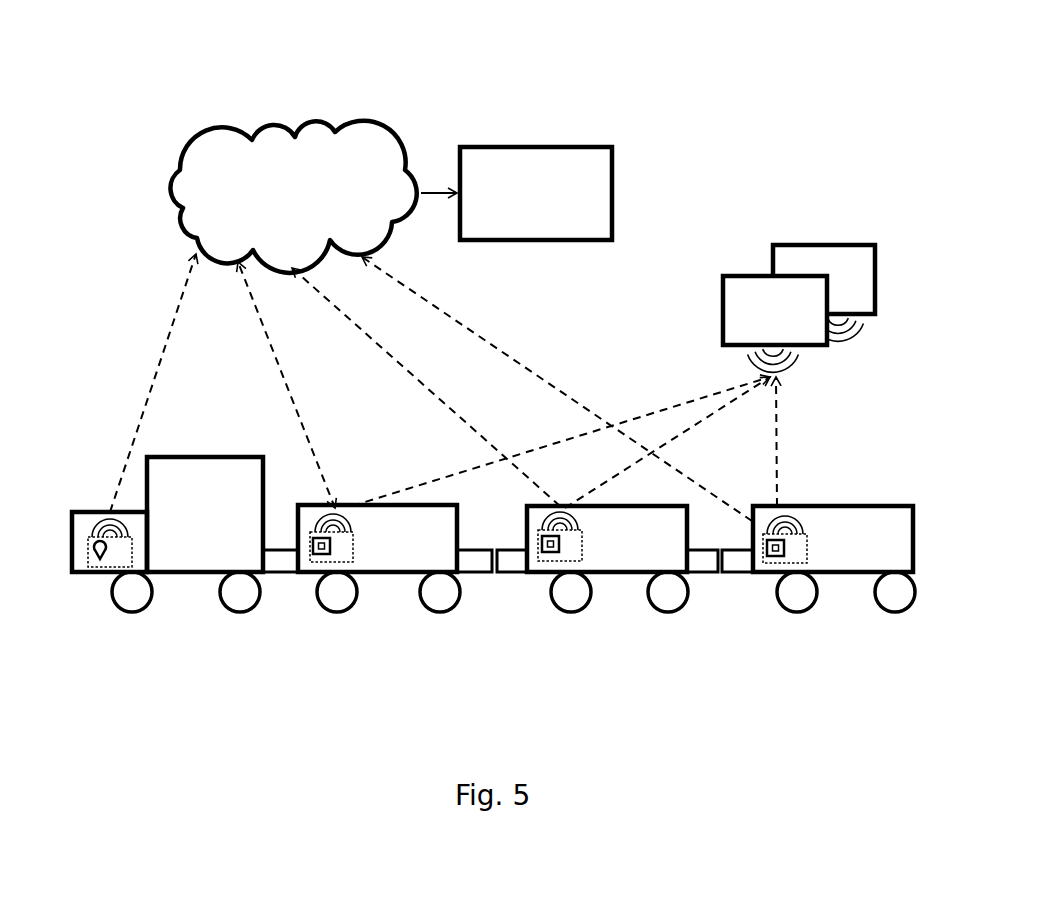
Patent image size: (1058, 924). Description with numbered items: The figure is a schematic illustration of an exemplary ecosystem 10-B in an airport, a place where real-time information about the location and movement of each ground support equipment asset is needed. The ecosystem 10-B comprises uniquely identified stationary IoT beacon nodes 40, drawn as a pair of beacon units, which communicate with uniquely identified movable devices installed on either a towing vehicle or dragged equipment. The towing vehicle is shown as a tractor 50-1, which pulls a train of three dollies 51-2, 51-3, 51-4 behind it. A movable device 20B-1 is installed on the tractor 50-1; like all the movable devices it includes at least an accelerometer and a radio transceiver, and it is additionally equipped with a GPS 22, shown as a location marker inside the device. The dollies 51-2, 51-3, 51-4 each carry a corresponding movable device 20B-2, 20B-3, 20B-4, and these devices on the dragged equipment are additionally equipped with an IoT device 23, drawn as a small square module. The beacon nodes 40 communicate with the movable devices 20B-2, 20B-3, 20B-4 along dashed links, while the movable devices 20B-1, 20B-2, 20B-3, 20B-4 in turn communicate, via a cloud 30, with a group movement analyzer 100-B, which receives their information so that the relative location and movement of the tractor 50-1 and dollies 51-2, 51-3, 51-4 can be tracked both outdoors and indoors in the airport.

The ecosystem 10-B is at (174, 62).
The cloud 30 is at (312, 128).
The group movement analyzer 100-B is at (535, 147).
The stationary IoT beacon node 40 is at (738, 276).
The tractor 50-1 is at (200, 457).
The movable device 20B-1 is at (95, 522).
The GPS 22 is at (100, 565).
The dolly 51-2 is at (428, 505).
The movable device 20B-2 is at (336, 506).
The IoT device 23 is at (318, 563).
The dolly 51-3 is at (680, 505).
The movable device 20B-3 is at (566, 507).
The dolly 51-4 is at (890, 505).
The movable device 20B-4 is at (790, 508).